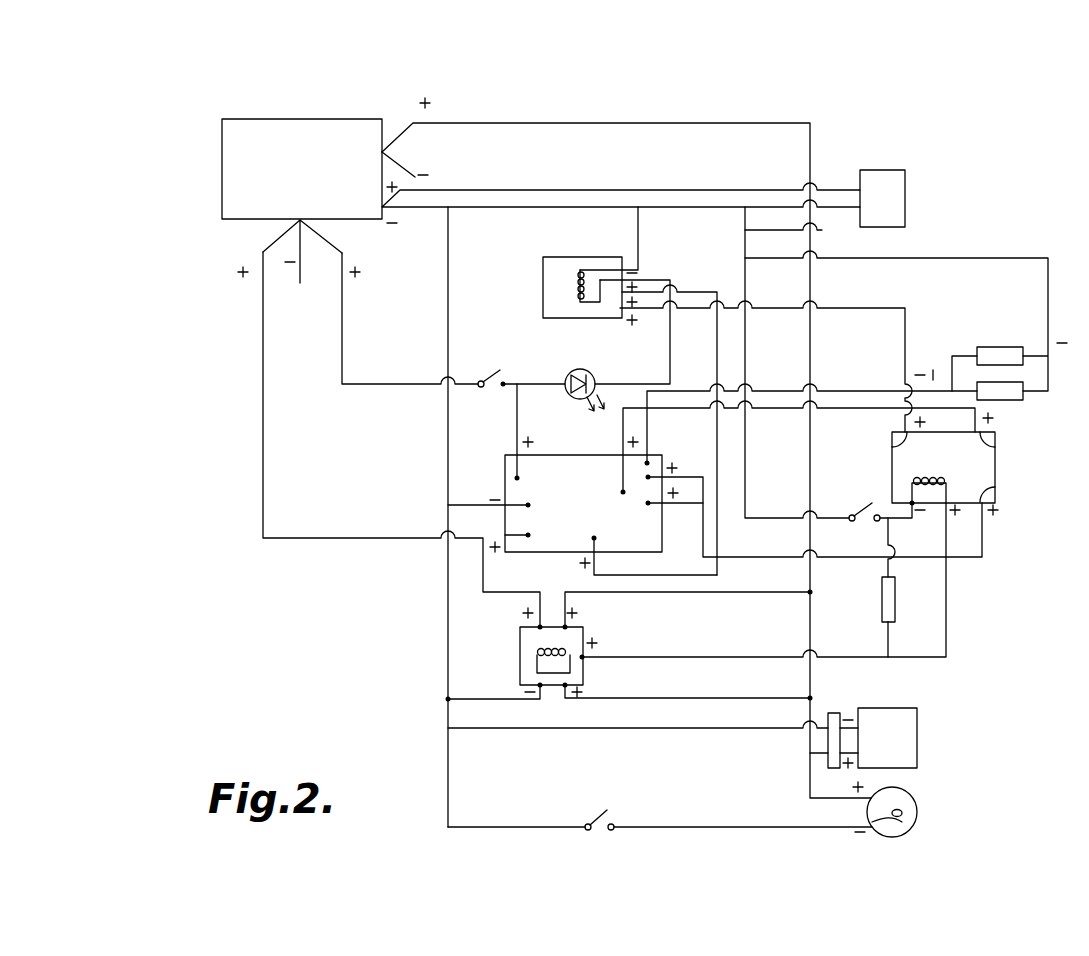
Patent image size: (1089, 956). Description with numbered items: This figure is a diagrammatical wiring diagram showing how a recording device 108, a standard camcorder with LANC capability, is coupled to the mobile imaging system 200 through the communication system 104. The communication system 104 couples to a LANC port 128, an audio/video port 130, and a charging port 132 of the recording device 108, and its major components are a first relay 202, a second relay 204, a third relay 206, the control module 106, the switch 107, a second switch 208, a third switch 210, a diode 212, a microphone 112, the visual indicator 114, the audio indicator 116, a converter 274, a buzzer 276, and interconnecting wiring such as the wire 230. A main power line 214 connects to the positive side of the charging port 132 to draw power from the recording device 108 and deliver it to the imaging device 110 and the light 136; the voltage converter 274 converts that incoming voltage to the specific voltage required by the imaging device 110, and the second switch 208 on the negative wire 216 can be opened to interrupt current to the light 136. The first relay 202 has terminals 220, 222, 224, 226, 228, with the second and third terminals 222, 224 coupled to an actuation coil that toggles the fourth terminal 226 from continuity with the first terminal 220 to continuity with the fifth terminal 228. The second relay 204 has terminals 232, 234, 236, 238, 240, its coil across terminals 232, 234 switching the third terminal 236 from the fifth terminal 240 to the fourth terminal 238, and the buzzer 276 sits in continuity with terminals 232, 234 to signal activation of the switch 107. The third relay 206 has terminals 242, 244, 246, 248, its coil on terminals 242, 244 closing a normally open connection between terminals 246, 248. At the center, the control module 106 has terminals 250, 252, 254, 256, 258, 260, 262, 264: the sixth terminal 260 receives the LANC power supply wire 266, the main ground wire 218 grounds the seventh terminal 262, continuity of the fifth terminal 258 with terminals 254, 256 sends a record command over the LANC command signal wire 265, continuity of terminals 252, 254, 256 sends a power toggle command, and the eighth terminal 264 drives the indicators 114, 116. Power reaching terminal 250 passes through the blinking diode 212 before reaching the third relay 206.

The communication system 104 is at (958, 153).
The control module 106 is at (562, 463).
The switch 107 is at (870, 508).
The recording device 108 is at (258, 118).
The imaging device 110 is at (908, 740).
The microphone 112 is at (880, 170).
The visual indicator 114 is at (997, 345).
The audio indicator 116 is at (1002, 400).
The LANC port 128 is at (300, 220).
The audio/video port 130 is at (382, 210).
The charging port 132 is at (382, 152).
The light 136 is at (918, 808).
The mobile imaging system 200 is at (289, 627).
The first relay 202 is at (557, 678).
The second relay 204 is at (988, 465).
The third relay 206 is at (543, 300).
The second switch 208 is at (597, 813).
The third switch 210 is at (490, 389).
The diode 212 is at (567, 373).
The main power line 214 is at (525, 123).
The negative wire 216 is at (737, 825).
The main ground wire 218 is at (513, 207).
The first terminal 220 is at (540, 628).
The second terminal 222 is at (540, 685).
The third terminal 224 is at (565, 685).
The fourth terminal 226 is at (583, 657).
The fifth terminal 228 is at (565, 628).
The conductor 230 is at (717, 652).
The first terminal 232 is at (912, 503).
The second terminal 234 is at (940, 504).
The third terminal 236 is at (995, 492).
The fourth terminal 238 is at (995, 438).
The fifth terminal 240 is at (892, 437).
The first terminal 242 is at (628, 268).
The second terminal 244 is at (637, 277).
The third terminal 246 is at (622, 293).
The fourth terminal 248 is at (618, 312).
The first terminal 250 is at (517, 478).
The second terminal 252 is at (623, 492).
The third terminal 254 is at (648, 477).
The fourth terminal 256 is at (648, 503).
The fifth terminal 258 is at (594, 540).
The sixth terminal 260 is at (528, 537).
The seventh terminal 262 is at (528, 507).
The eighth terminal 264 is at (647, 463).
The LANC command signal wire 265 is at (342, 307).
The LANC power supply wire 266 is at (263, 357).
The converter 274 is at (833, 712).
The buzzer 276 is at (895, 598).